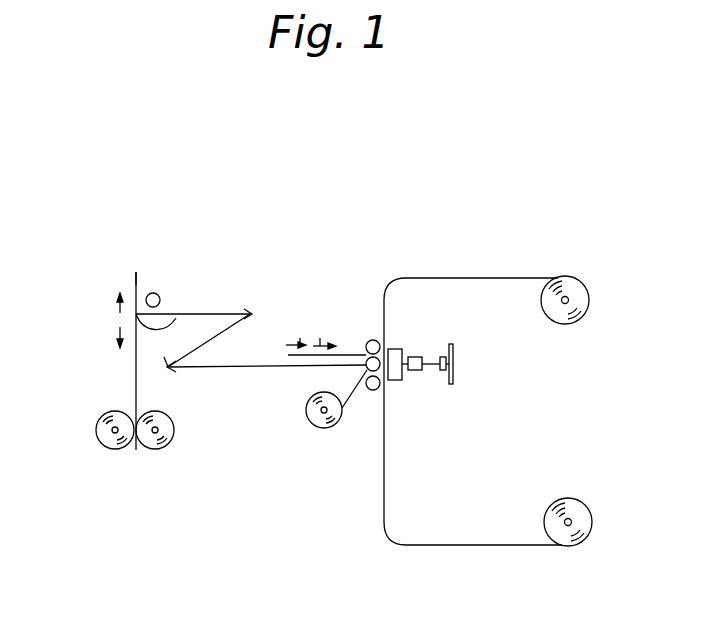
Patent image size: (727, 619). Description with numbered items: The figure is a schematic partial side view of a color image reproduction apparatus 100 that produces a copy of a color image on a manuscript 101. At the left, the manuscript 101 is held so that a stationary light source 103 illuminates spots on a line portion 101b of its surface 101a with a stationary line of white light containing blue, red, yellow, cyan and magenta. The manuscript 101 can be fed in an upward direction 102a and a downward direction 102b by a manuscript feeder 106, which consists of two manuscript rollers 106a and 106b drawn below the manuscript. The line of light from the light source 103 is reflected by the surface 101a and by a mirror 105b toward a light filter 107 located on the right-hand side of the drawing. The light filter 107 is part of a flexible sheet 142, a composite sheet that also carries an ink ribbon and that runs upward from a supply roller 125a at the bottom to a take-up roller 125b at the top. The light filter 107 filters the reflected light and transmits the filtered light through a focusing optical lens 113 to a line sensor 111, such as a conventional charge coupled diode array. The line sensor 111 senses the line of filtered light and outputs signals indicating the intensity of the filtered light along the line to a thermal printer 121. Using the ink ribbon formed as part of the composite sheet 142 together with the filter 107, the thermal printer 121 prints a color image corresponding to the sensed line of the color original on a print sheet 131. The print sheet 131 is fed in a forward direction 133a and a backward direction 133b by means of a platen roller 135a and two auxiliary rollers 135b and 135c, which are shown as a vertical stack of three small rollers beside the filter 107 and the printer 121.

The color image reproduction apparatus 100 is at (322, 224).
The manuscript 101 is at (135, 385).
The surface of the manuscript 101a is at (137, 272).
The line portion of the surface 101b is at (176, 318).
The upward direction 102a is at (119, 304).
The downward direction 102b is at (119, 332).
The stationary light source 103 is at (157, 294).
The mirror 105b is at (168, 368).
The manuscript feeder 106 is at (131, 473).
The manuscript roller 106a is at (104, 443).
The manuscript roller 106b is at (152, 462).
The light filter 107 is at (386, 320).
The line sensor 111 is at (455, 349).
The focusing optical lens 113 is at (416, 372).
The thermal printer 121 is at (395, 381).
The supply roller 125a is at (568, 520).
The take-up roller 125b is at (566, 300).
The print sheet 131 is at (343, 413).
The forward direction 133a is at (300, 338).
The backward direction 133b is at (320, 340).
The platen roller 135a is at (254, 312).
The auxiliary roller 135b is at (375, 391).
The auxiliary roller 135c is at (373, 339).
The flexible sheet 142 is at (391, 500).